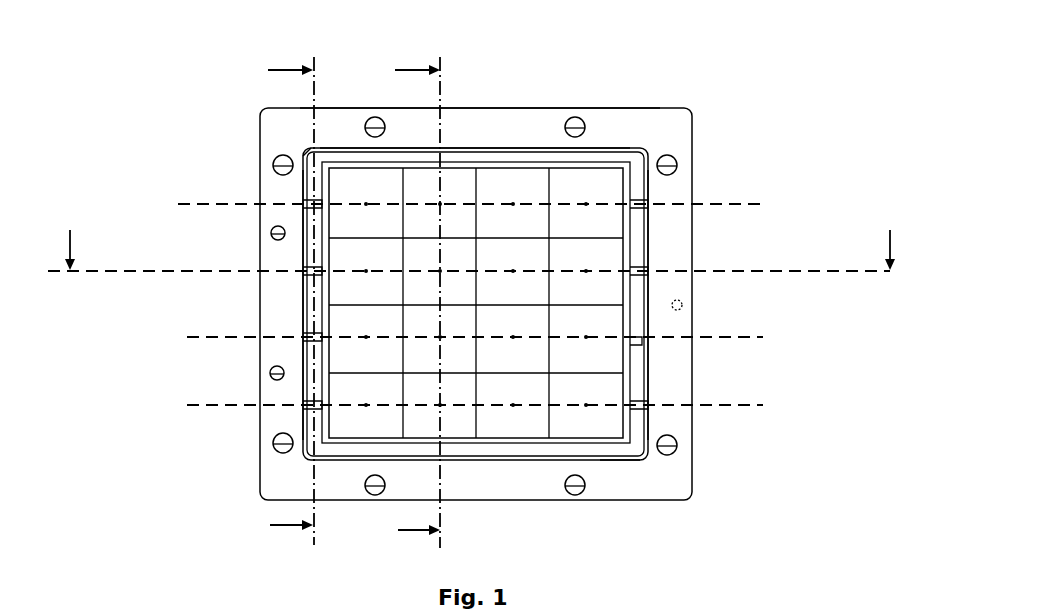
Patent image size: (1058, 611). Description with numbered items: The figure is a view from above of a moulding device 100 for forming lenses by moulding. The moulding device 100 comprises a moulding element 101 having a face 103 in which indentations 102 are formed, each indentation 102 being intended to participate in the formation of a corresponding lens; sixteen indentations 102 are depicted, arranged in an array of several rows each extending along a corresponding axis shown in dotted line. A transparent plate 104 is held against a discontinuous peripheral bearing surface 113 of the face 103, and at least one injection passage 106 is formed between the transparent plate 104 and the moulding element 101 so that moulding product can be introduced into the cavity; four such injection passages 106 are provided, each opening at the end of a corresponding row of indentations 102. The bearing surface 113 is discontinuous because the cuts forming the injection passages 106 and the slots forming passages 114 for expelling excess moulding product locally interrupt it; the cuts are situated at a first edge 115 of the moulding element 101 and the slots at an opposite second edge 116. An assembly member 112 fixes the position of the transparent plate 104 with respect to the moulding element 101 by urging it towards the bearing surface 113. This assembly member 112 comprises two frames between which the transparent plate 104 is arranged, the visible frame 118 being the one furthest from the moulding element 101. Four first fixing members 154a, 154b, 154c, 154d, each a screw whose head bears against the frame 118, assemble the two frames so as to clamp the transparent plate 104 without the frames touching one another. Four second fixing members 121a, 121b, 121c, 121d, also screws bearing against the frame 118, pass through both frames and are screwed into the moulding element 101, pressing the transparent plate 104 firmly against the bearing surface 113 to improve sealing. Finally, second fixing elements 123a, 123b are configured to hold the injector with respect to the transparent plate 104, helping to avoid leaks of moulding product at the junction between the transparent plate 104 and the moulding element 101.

The moulding device 100 is at (250, 84).
The moulding element 101 is at (603, 148).
The indentations 102 is at (458, 422).
The face 103 is at (322, 154).
The transparent plate 104 is at (474, 148).
The injection passage 106 is at (303, 207).
The assembly member 112 is at (538, 100).
The peripheral bearing surface 113 is at (598, 453).
The passage for expelling excess moulding product 114 is at (642, 343).
The first edge 115 is at (295, 297).
The second edge 116 is at (656, 291).
The frame 118 is at (282, 480).
The second fixing member 121a is at (280, 167).
The second fixing member 121b is at (277, 436).
The second fixing member 121c is at (672, 160).
The second fixing member 121d is at (672, 450).
The second fixing element 123a is at (285, 240).
The second fixing element 123b is at (272, 373).
The first fixing member 154a is at (377, 118).
The first fixing member 154b is at (375, 498).
The first fixing member 154c is at (579, 121).
The first fixing member 154d is at (578, 497).